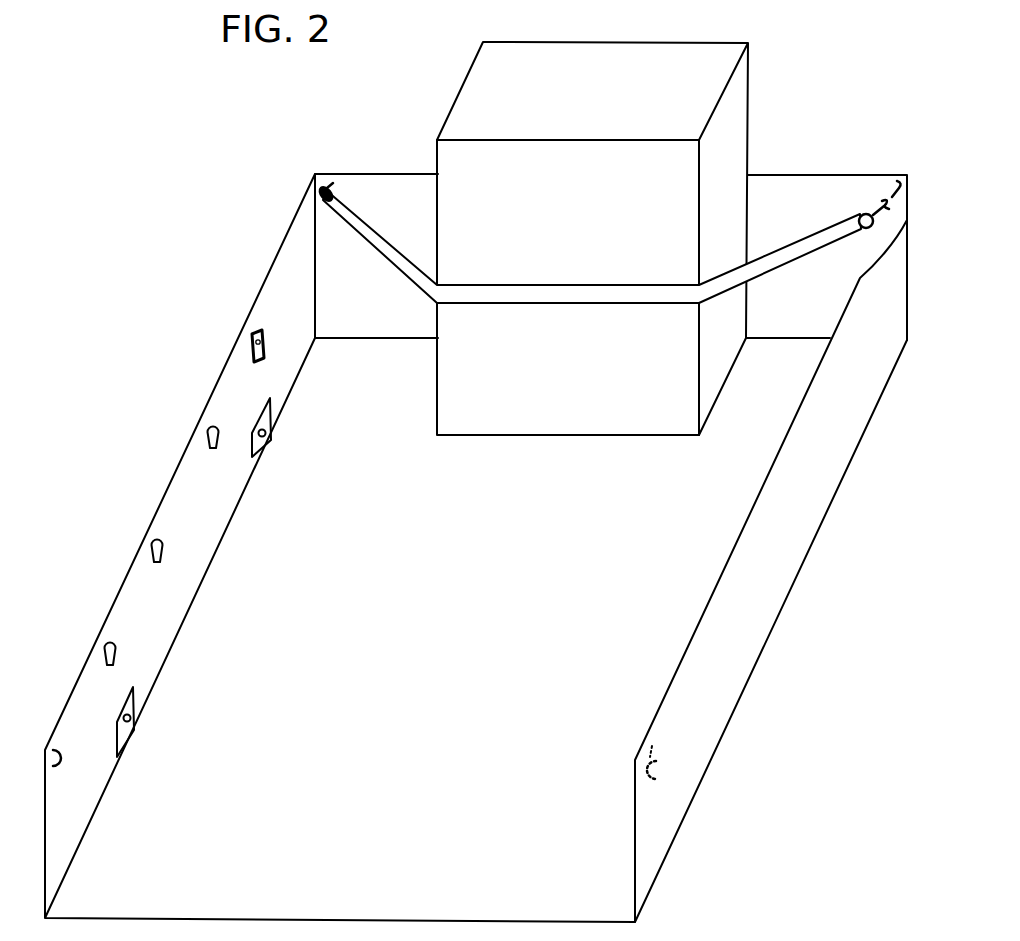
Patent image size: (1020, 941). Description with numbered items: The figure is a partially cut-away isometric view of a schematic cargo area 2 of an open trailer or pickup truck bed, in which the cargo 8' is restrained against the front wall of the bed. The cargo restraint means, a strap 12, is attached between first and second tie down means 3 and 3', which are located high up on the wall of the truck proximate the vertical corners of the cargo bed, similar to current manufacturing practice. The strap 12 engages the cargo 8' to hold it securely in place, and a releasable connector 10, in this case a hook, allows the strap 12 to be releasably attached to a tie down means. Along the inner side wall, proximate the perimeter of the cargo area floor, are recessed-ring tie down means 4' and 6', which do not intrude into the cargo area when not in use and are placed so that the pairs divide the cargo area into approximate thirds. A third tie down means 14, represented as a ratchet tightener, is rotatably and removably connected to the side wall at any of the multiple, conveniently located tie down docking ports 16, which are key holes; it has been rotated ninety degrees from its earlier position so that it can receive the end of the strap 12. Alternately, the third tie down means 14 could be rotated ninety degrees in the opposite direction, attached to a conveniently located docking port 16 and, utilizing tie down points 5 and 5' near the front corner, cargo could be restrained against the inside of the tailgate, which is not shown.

The cargo area 2 is at (781, 172).
The first tie down means 3 is at (897, 162).
The second tie down means 3' is at (339, 149).
The second tie down means 4' is at (311, 443).
The tie down point 5 is at (639, 711).
The tie down point 5' is at (64, 678).
The tie down means 6' is at (187, 725).
The cargo 8' is at (592, 290).
The releasable connector 10 is at (878, 218).
The strap 12 is at (527, 308).
The third tie down means 14 is at (243, 370).
The tie down docking ports 16 is at (209, 448).